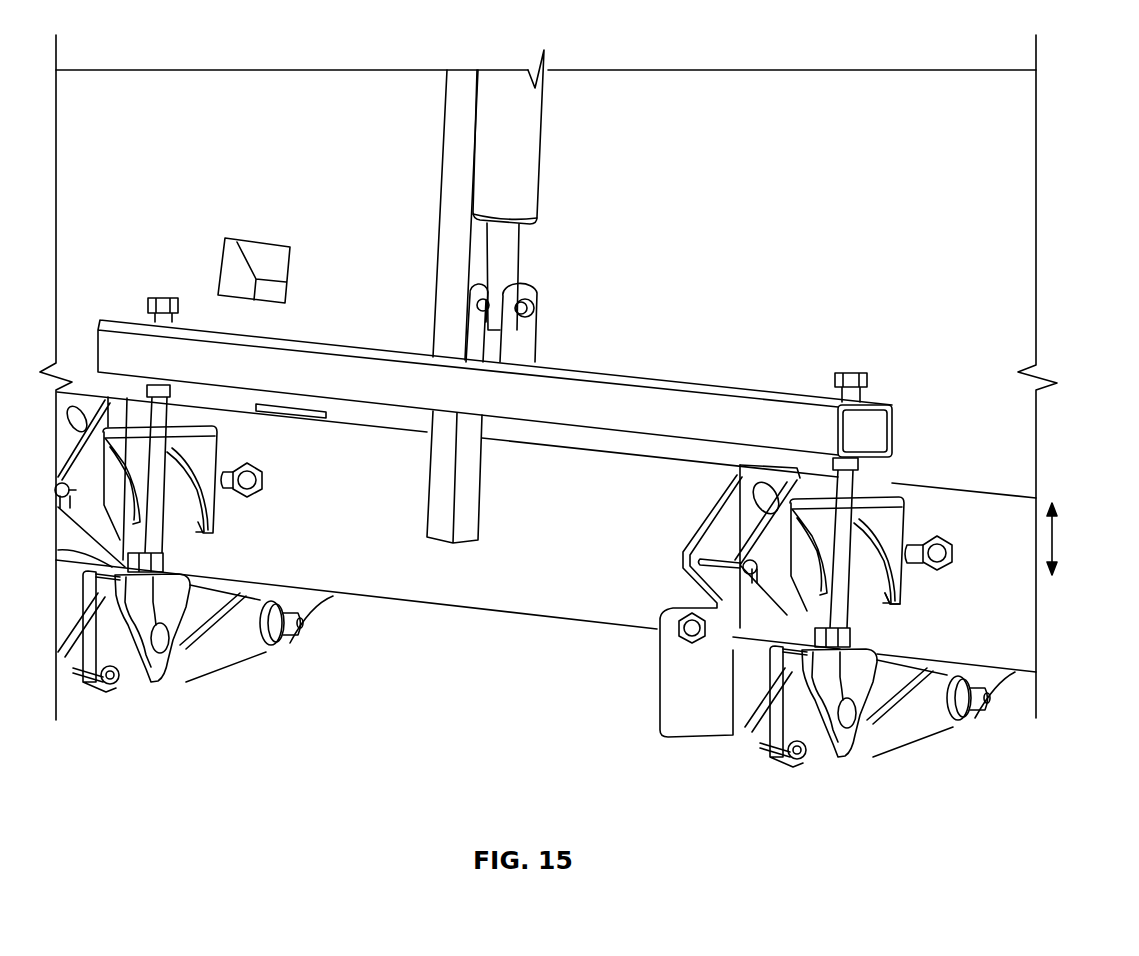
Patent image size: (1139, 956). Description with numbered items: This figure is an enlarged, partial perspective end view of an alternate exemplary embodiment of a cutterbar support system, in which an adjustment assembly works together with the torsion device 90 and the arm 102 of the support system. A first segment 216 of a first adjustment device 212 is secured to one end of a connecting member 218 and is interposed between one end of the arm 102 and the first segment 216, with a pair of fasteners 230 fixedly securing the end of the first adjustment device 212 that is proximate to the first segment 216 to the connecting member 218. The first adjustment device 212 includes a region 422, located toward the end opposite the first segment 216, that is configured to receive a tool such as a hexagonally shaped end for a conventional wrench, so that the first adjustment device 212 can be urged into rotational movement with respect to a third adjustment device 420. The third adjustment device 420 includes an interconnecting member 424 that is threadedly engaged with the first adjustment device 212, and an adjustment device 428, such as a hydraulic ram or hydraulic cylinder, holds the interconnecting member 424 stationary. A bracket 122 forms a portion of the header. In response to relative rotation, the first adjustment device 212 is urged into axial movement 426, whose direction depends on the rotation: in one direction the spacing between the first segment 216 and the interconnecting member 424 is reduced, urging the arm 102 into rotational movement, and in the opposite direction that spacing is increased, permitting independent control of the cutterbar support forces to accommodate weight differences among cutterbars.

The torsion device 90 is at (120, 733).
The arm 102 is at (232, 670).
The bracket 122 is at (878, 488).
The first adjustment device 212 is at (893, 587).
The first segment 216 is at (843, 608).
The connecting member 218 is at (862, 668).
The fasteners 230 is at (777, 632).
The third adjustment device 420 is at (753, 358).
The region 422 is at (162, 297).
The interconnecting member 424 is at (626, 375).
The axial movement 426 is at (1053, 546).
The adjustment device 428 is at (542, 157).